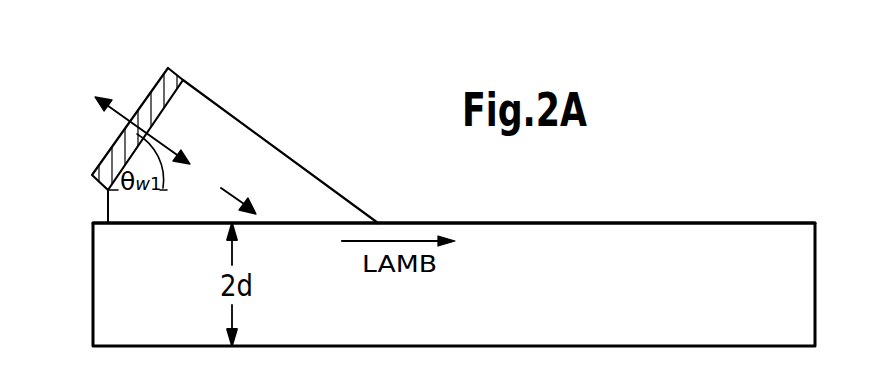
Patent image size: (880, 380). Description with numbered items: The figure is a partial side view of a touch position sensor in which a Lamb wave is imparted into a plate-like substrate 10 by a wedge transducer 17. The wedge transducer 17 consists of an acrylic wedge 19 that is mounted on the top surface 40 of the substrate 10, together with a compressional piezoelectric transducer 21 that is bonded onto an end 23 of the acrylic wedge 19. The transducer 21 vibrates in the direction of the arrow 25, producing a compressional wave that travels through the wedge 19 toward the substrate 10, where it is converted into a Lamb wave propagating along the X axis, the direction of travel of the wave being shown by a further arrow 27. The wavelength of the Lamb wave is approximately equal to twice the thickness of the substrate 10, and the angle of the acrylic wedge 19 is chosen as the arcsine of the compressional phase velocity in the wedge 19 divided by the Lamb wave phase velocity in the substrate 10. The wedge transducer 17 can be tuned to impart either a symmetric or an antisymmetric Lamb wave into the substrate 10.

The substrate 10 is at (552, 237).
The wedge transducer 17 is at (235, 118).
The acrylic wedge 19 is at (303, 164).
The compressional piezoelectric transducer 21 is at (167, 70).
The end of the acrylic wedge 23 is at (182, 80).
The arrow 25 is at (97, 106).
The incident wave entry 27 is at (220, 187).
The top surface 40 is at (478, 222).